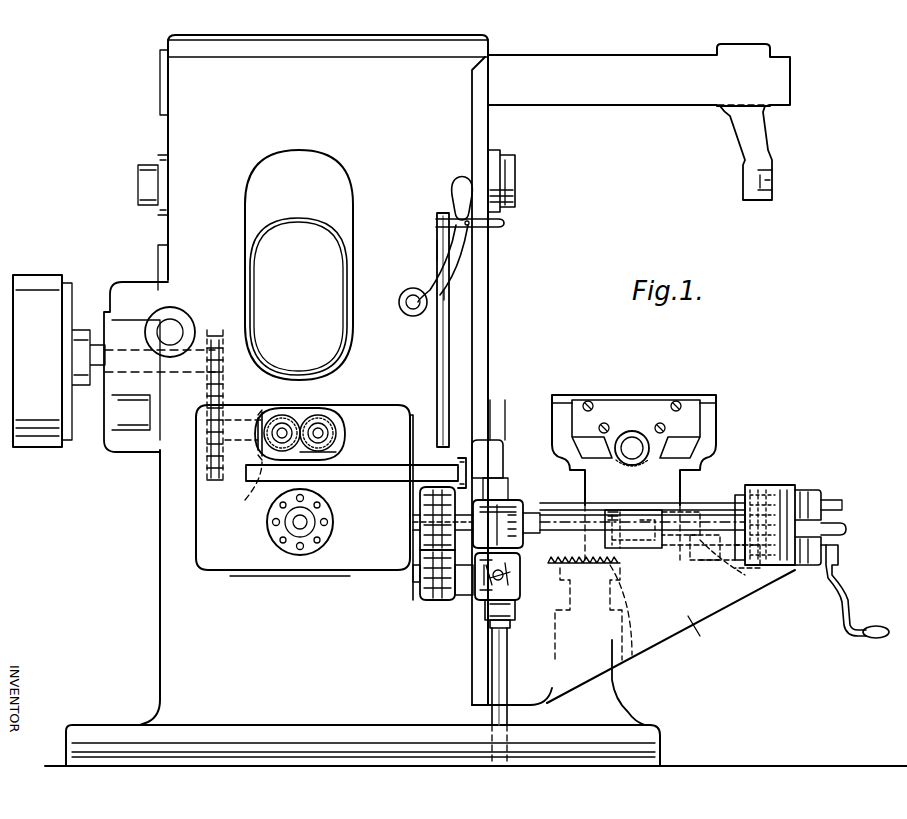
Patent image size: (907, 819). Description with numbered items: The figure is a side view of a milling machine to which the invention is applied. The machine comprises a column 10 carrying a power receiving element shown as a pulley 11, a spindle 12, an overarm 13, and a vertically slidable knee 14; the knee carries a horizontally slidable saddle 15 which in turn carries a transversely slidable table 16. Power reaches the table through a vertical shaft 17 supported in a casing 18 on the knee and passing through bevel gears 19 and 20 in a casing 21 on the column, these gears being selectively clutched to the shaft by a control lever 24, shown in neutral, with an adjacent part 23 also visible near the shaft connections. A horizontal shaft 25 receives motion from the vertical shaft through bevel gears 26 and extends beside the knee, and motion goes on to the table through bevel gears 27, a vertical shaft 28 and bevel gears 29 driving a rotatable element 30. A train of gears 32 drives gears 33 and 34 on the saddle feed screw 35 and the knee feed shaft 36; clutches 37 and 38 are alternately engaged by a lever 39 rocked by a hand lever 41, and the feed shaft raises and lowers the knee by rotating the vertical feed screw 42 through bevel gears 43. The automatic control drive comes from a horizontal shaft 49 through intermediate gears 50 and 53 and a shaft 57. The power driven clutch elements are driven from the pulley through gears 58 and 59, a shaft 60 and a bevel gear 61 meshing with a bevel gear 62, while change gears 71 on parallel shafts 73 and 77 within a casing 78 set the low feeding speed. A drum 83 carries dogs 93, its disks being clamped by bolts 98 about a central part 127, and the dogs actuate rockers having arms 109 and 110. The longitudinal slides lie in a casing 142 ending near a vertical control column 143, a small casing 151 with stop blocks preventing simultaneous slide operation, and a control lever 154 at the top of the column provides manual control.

The column 10 is at (180, 130).
The pulley 11 is at (38, 285).
The spindle 12 is at (514, 168).
The overarm 13 is at (576, 62).
The knee 14 is at (671, 636).
The saddle 15 is at (698, 500).
The table 16 is at (634, 405).
The vertical shaft 17 is at (490, 668).
The casing 18 is at (500, 505).
The bevel gear 19 is at (520, 556).
The bevel gear 20 is at (485, 604).
The casing 21 is at (490, 606).
The clamp block 23 is at (622, 489).
The control lever 24 is at (504, 576).
The horizontal shaft 25 is at (552, 512).
The bevel gears 26 is at (420, 532).
The bevel gears 27 is at (672, 510).
The vertical shaft 28 is at (458, 592).
The bevel gears 29 is at (655, 420).
The rotatable element 30 is at (630, 445).
The train of gears 32 is at (790, 582).
The gear 33 is at (776, 485).
The gear 34 is at (778, 570).
The saddle feed screw 35 is at (742, 470).
The feed shaft 36 is at (712, 560).
The clutch 37 is at (760, 488).
The clutch 38 is at (746, 570).
The lever 39 is at (694, 560).
The hand lever 41 is at (846, 528).
The vertical feed screw 42 is at (640, 660).
The bevel gears 43 is at (622, 580).
The horizontal shaft 49 is at (413, 522).
The intermediate gear 50 is at (430, 470).
The intermediate gear 53 is at (420, 594).
The shaft 57 is at (413, 574).
The gear 58 is at (212, 330).
The gear 59 is at (240, 418).
The shaft 60 is at (282, 415).
The bevel gear 61 is at (292, 412).
The bevel gear 62 is at (262, 482).
The change gears 71 is at (333, 424).
The shaft 73 is at (330, 410).
The shaft 77 is at (336, 433).
The casing 78 is at (338, 455).
The drum 83 is at (268, 532).
The dogs 93 is at (272, 522).
The clamping bolts 98 is at (304, 548).
The arm 109 is at (305, 498).
The arm 110 is at (280, 506).
The hub 127 is at (296, 526).
The casing 142 is at (410, 498).
The vertical control column 143 is at (437, 357).
The casing 151 is at (463, 455).
The control lever 154 is at (500, 230).